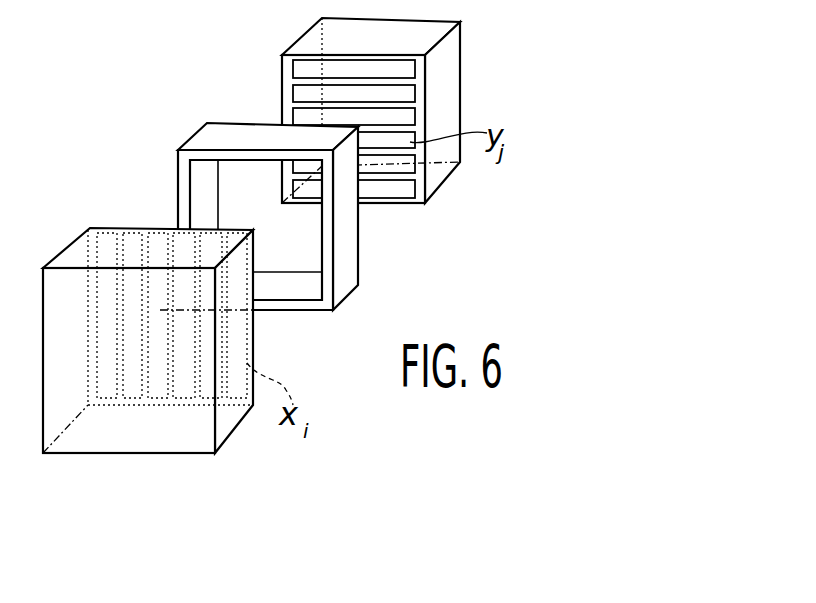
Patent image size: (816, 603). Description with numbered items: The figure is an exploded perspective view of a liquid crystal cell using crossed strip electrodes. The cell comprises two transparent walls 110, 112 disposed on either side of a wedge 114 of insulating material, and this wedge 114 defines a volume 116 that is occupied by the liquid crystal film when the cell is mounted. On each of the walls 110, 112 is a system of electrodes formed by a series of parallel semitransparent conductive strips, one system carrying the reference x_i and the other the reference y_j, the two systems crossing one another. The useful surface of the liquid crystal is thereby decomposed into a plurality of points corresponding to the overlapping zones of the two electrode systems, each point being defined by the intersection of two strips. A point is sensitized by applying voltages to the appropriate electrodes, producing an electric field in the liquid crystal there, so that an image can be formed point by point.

The transparent wall 110 is at (70, 258).
The transparent wall 112 is at (305, 43).
The wedge of insulating material 114 is at (210, 138).
The volume 116 is at (311, 246).